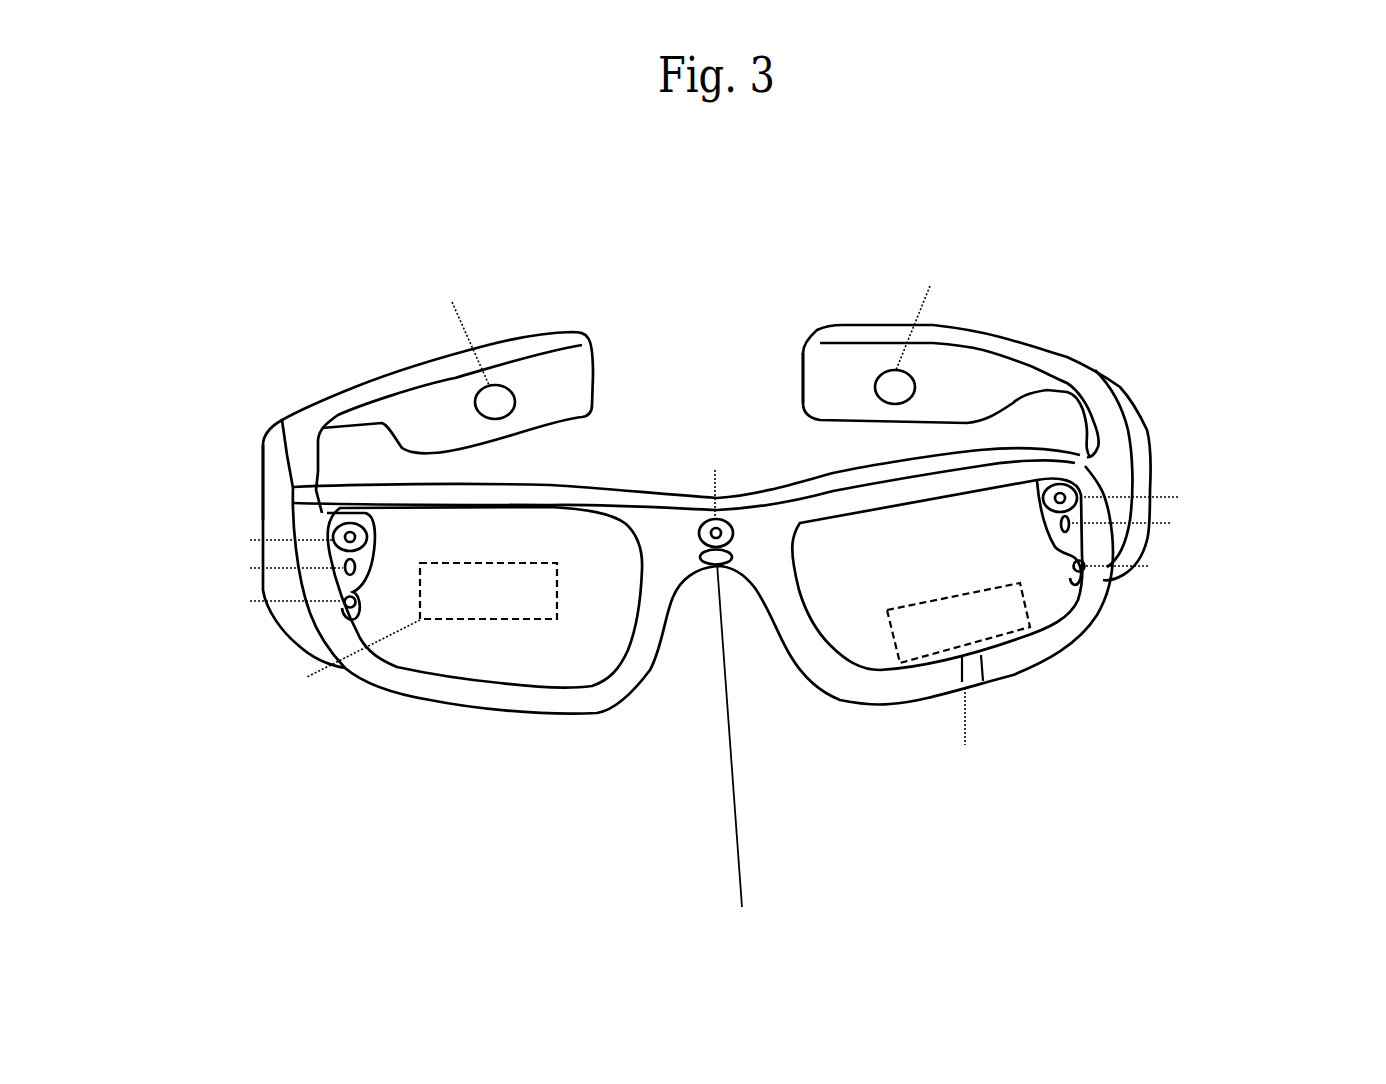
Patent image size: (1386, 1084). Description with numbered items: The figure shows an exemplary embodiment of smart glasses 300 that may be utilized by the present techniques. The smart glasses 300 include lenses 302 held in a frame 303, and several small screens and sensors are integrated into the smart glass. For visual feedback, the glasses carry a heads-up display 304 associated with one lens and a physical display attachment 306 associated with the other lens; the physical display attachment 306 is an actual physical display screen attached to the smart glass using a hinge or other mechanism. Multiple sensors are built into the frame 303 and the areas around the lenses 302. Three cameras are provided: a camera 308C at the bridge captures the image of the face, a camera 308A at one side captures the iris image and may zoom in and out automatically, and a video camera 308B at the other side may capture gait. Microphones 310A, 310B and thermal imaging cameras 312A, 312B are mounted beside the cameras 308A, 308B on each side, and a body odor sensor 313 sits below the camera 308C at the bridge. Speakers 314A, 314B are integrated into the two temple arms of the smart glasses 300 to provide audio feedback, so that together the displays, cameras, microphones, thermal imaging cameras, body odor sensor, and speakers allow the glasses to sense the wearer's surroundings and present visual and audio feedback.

The smart glasses 300 is at (1087, 360).
The lenses 302 is at (487, 663).
The frame 303 is at (591, 488).
The heads-up display 304 is at (517, 607).
The physical display attachment 306 is at (1010, 630).
The camera 308A is at (342, 526).
The video camera 308B is at (1073, 483).
The camera 308C is at (727, 527).
The microphone 310A is at (345, 560).
The microphone 310B is at (1070, 523).
The thermal imaging camera 312A is at (349, 596).
The thermal imaging camera 312B is at (1081, 561).
The body odor sensor 313 is at (718, 565).
The speaker 314A is at (502, 393).
The speaker 314B is at (900, 378).